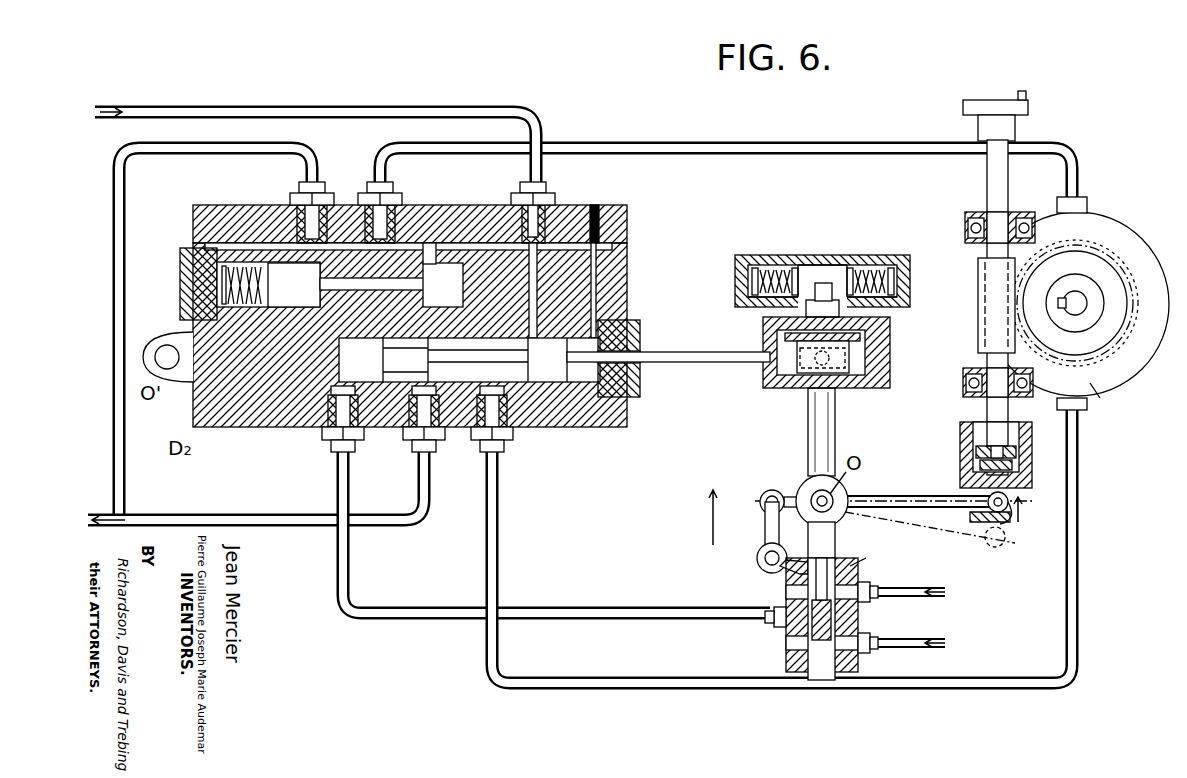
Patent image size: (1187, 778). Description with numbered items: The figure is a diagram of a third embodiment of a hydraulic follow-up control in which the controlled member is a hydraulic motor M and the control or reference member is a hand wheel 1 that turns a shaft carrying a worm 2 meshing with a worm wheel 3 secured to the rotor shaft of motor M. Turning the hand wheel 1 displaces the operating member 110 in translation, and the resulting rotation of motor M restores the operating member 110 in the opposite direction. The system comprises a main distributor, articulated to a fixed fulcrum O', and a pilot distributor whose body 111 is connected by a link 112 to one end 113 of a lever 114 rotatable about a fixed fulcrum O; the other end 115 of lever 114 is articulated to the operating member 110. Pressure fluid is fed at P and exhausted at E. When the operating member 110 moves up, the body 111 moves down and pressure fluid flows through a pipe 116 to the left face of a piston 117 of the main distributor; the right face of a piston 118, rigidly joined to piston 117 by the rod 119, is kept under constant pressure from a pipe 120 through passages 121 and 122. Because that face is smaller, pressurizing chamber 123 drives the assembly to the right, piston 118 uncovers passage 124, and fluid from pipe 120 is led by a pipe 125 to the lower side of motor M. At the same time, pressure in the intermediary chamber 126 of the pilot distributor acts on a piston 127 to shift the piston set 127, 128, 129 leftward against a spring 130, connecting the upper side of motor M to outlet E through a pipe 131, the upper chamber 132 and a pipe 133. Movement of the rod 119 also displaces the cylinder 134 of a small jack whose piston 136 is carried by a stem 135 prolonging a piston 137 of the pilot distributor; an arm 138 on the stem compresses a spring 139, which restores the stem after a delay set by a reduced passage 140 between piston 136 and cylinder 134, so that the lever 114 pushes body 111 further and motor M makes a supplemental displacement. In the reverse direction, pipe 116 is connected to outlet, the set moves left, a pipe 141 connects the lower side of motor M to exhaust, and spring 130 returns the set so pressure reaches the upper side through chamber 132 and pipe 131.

The hand wheel 1 is at (963, 106).
The worm 2 is at (988, 278).
The worm wheel 3 is at (1092, 256).
The operating member 110 is at (960, 441).
The body of the pilot distributor 111 is at (786, 660).
The link 112 is at (765, 529).
The end of lever 113 is at (762, 492).
The lever 114 is at (922, 495).
The other end of lever 115 is at (1010, 512).
The pipe 116 is at (392, 621).
The piston 117 is at (388, 428).
The piston 118 is at (548, 385).
The rod 119 is at (686, 352).
The pipe 120 is at (542, 123).
The passage 121 is at (608, 205).
The passage 122 is at (612, 298).
The chamber 123 is at (305, 408).
The passage 124 is at (585, 215).
The pipe 125 is at (662, 682).
The intermediary chamber 126 is at (461, 430).
The piston 127 is at (452, 240).
The piston 128 is at (360, 212).
The piston 129 is at (280, 265).
The spring 130 is at (238, 255).
The pipe 131 is at (724, 146).
The upper chamber 132 is at (300, 262).
The pipe 133 is at (127, 175).
The cylinder 134 is at (770, 380).
The stem 135 is at (835, 410).
The piston 136 is at (860, 356).
The piston 137 is at (786, 576).
The arm 138 is at (838, 256).
The spring 139 is at (762, 268).
The passage 140 is at (800, 376).
The pipe 141 is at (246, 513).